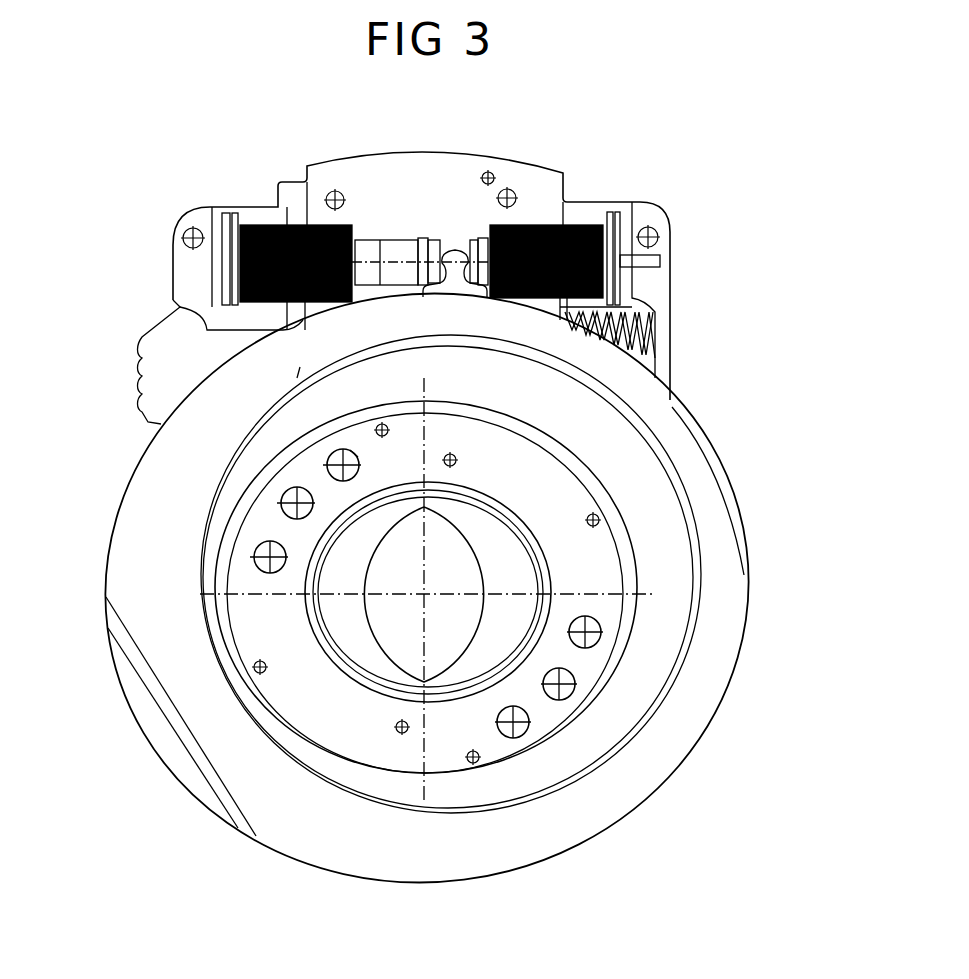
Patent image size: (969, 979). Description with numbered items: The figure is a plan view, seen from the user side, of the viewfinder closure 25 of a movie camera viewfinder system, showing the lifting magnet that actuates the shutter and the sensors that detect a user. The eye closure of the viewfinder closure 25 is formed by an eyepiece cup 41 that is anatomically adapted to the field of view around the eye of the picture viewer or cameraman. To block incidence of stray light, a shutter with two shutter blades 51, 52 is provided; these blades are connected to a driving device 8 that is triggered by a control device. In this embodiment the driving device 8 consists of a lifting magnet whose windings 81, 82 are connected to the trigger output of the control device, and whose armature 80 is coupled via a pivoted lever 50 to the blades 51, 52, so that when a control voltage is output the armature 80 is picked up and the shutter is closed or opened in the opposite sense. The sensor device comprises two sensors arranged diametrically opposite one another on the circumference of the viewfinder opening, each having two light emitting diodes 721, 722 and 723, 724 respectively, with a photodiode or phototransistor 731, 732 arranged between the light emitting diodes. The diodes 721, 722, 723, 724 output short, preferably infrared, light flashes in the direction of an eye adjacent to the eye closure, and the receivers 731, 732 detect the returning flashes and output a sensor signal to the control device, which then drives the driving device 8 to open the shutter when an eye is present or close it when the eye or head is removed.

The driving device 8 is at (527, 180).
The viewfinder closure 25 is at (677, 294).
The eyepiece cup 41 is at (663, 770).
The pivoted lever 50 is at (460, 255).
The shutter blade 51 is at (361, 658).
The shutter blade 52 is at (498, 535).
The armature 80 is at (403, 247).
The winding 81 is at (267, 230).
The winding 82 is at (588, 223).
The light emitting diode 721 is at (254, 560).
The light emitting diode 722 is at (337, 470).
The light emitting diode 723 is at (518, 728).
The light emitting diode 724 is at (590, 631).
The photodiode or phototransistor 731 is at (289, 502).
The photodiode or phototransistor 732 is at (567, 690).